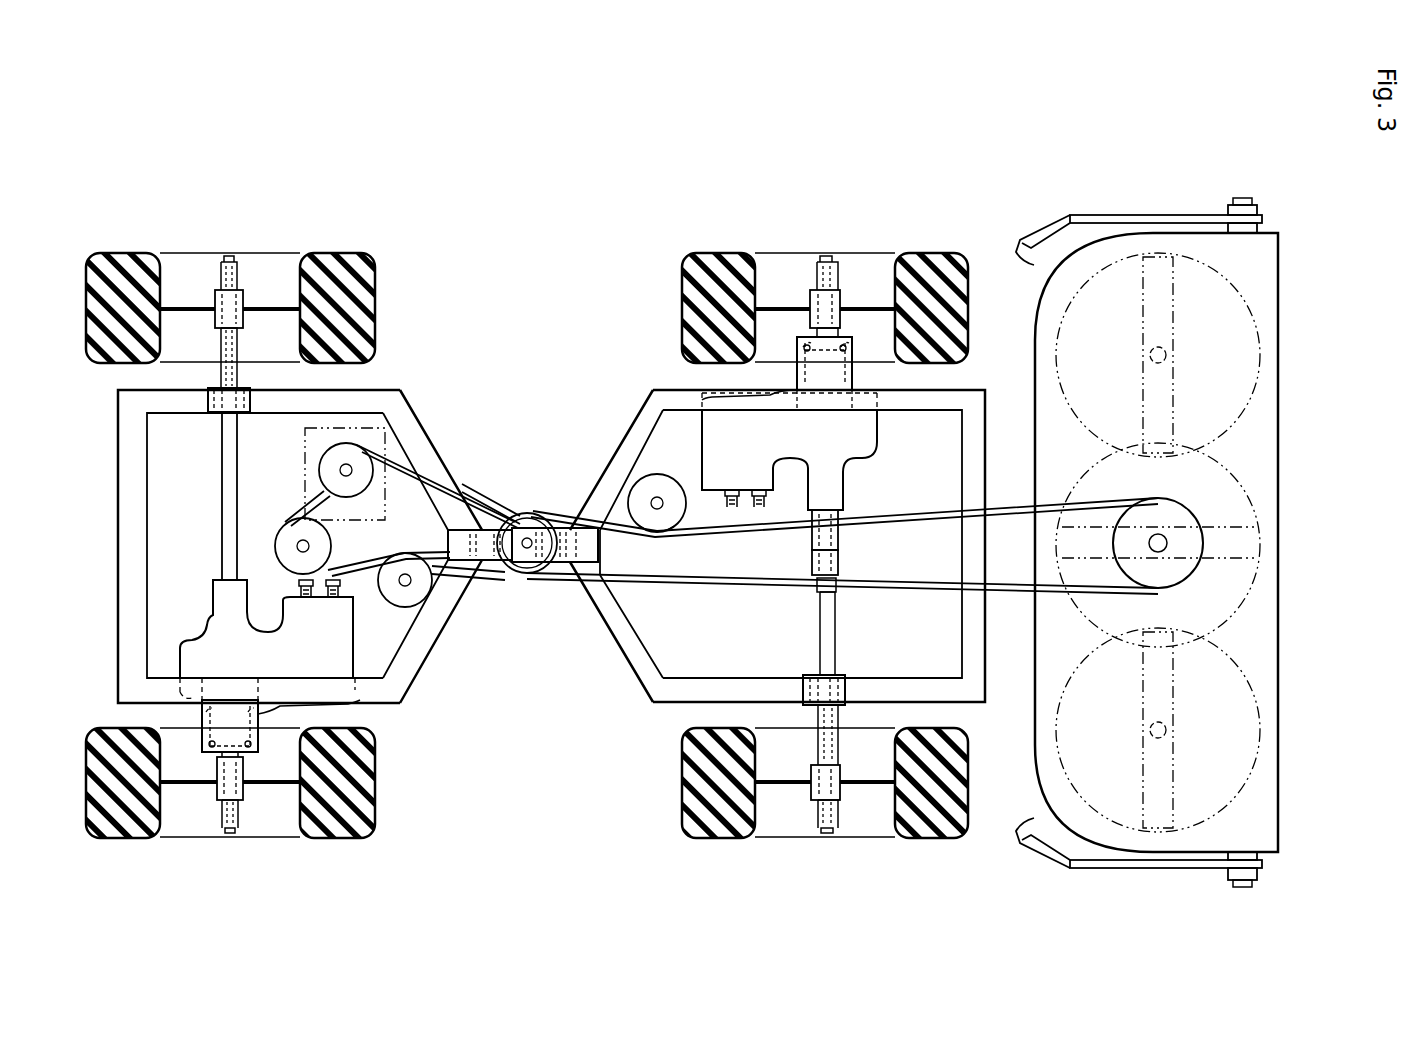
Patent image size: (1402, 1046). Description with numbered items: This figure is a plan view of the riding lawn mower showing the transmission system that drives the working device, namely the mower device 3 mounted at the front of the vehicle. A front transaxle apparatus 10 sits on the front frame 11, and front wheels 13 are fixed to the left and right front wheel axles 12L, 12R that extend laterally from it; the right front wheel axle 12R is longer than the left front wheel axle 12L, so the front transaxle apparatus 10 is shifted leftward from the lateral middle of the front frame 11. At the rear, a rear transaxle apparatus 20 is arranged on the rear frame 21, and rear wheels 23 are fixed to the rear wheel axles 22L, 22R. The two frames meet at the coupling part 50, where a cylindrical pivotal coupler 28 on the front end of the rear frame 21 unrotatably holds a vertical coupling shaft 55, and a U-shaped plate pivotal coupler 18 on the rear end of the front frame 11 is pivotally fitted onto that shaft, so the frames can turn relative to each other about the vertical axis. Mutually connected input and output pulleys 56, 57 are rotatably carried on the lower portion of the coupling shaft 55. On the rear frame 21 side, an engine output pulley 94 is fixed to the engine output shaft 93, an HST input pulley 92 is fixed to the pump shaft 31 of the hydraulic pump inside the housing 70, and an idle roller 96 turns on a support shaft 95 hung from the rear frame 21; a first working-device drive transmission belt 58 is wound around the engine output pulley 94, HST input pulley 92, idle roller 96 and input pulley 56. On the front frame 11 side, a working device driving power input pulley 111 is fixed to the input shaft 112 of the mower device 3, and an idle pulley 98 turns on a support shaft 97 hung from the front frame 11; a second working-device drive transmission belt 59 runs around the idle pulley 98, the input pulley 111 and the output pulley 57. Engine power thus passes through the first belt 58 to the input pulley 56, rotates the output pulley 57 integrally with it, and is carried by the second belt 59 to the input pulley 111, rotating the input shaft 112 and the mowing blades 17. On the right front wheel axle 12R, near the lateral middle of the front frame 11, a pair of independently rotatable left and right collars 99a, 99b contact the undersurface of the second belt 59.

The mower device 3 is at (1147, 522).
The front transaxle apparatus 10 is at (846, 488).
The front frame 11 is at (618, 662).
The left front wheel axle 12L is at (836, 304).
The right front wheel axle 12R is at (833, 671).
The front wheels 13 is at (682, 310).
The mowing blades 17 is at (1172, 306).
The plate pivotal coupler 18 is at (580, 584).
The rear transaxle apparatus 20 is at (216, 604).
The rear frame 21 is at (428, 664).
The left rear wheel axle 22L is at (219, 434).
The right rear wheel axle 22R is at (240, 785).
The rear wheels 23 is at (377, 309).
The cylindrical pivotal coupler 28 is at (544, 576).
The pump shaft 31 is at (352, 470).
The coupling part 50 is at (547, 531).
The coupling shaft 55 is at (522, 550).
The input pulley 56 is at (552, 520).
The output pulley 57 is at (522, 516).
The first working-device drive transmission belt 58 is at (468, 496).
The second working-device drive transmission belt 59 is at (728, 576).
The housing 70 is at (310, 458).
The HST input pulley 92 is at (368, 498).
The output shaft 93 is at (305, 542).
The engine output pulley 94 is at (326, 524).
The support shaft 95 is at (399, 584).
The idle roller 96 is at (389, 604).
The support shaft 97 is at (658, 512).
The idle pulley 98 is at (644, 530).
The left collar 99a is at (840, 556).
The right collar 99b is at (840, 532).
The working device driving power input pulley 111 is at (1182, 512).
The input shaft 112 is at (1158, 550).